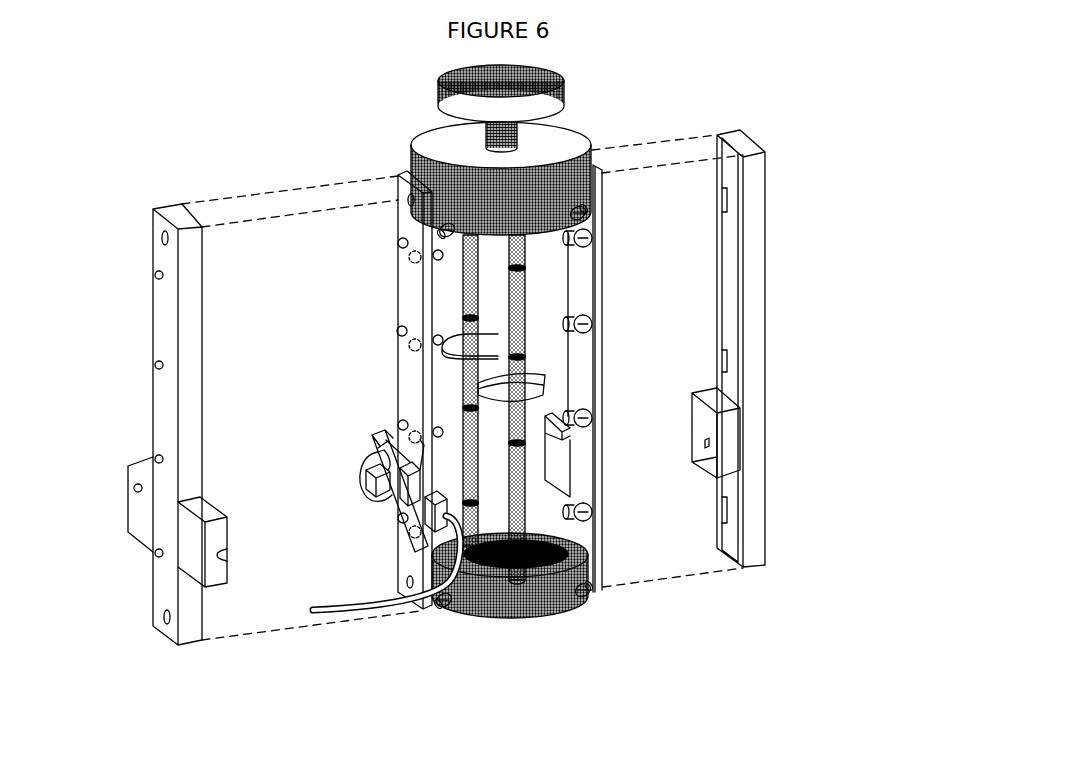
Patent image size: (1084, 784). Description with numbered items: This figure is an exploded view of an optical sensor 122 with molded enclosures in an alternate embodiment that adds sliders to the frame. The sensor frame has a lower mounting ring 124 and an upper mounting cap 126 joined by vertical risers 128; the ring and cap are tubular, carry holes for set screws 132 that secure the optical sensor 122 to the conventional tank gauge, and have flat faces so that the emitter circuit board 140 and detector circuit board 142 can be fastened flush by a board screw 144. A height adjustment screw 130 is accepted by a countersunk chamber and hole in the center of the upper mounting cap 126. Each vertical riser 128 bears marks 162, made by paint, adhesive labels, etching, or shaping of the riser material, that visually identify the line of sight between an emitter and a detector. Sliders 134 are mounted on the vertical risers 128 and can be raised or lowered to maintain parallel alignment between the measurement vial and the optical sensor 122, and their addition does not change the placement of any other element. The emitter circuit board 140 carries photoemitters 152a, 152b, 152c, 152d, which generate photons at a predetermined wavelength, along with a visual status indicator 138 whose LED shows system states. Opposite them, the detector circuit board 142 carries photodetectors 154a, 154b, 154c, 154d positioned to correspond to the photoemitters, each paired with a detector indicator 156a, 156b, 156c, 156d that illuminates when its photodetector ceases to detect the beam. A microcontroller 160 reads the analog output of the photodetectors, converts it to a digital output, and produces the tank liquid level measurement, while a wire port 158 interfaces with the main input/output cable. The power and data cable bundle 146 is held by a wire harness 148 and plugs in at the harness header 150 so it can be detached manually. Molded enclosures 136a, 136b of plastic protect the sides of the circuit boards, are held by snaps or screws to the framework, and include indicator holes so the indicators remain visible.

The optical sensor 122 is at (834, 132).
The lower mounting ring 124 is at (505, 621).
The upper mounting cap 126 is at (592, 157).
The vertical risers 128 is at (462, 372).
The height adjustment screw 130 is at (558, 95).
The set screws 132 is at (402, 241).
The sliders 134 is at (444, 347).
The molded enclosure 136a is at (153, 402).
The molded enclosure 136b is at (765, 340).
The visual status indicator 138 is at (372, 442).
The emitter circuit board 140 is at (603, 470).
The detector circuit board 142 is at (397, 291).
The board screw 144 is at (405, 201).
The power and data cable bundle 146 is at (374, 614).
The wire harness 148 is at (358, 464).
The harness header 150 is at (365, 482).
The photoemitter 152a is at (592, 510).
The photoemitter 152b is at (592, 413).
The photoemitter 152c is at (592, 322).
The photoemitter 152d is at (592, 236).
The photodetector 154a is at (410, 534).
The photodetector 154b is at (408, 437).
The photodetector 154c is at (408, 345).
The photodetector 154d is at (408, 257).
The detector indicator 156a is at (398, 520).
The detector indicator 156b is at (397, 425).
The detector indicator 156c is at (396, 331).
The detector indicator 156d is at (397, 244).
The wire port 158 is at (424, 518).
The microcontroller 160 is at (400, 497).
The marks 162 is at (527, 274).